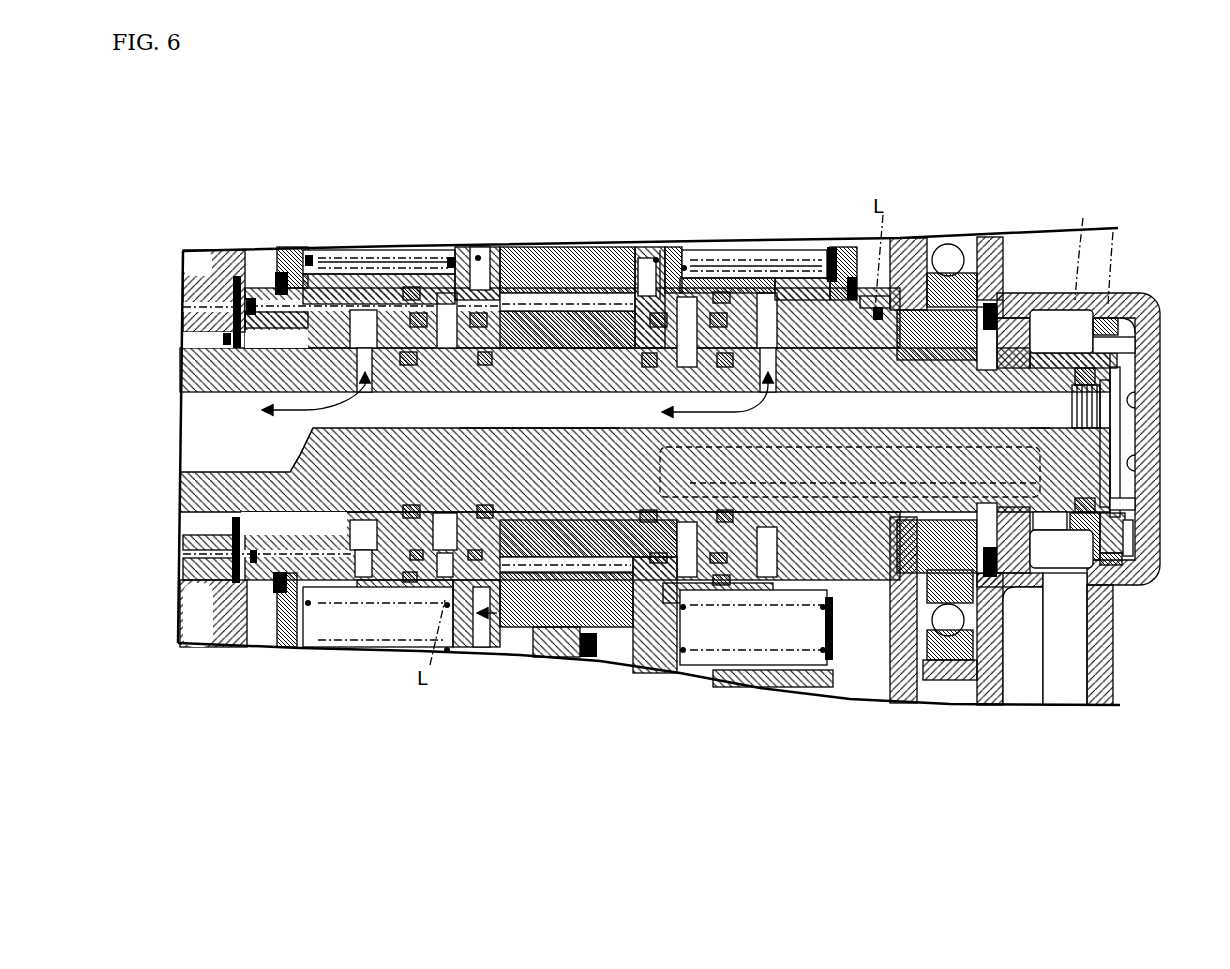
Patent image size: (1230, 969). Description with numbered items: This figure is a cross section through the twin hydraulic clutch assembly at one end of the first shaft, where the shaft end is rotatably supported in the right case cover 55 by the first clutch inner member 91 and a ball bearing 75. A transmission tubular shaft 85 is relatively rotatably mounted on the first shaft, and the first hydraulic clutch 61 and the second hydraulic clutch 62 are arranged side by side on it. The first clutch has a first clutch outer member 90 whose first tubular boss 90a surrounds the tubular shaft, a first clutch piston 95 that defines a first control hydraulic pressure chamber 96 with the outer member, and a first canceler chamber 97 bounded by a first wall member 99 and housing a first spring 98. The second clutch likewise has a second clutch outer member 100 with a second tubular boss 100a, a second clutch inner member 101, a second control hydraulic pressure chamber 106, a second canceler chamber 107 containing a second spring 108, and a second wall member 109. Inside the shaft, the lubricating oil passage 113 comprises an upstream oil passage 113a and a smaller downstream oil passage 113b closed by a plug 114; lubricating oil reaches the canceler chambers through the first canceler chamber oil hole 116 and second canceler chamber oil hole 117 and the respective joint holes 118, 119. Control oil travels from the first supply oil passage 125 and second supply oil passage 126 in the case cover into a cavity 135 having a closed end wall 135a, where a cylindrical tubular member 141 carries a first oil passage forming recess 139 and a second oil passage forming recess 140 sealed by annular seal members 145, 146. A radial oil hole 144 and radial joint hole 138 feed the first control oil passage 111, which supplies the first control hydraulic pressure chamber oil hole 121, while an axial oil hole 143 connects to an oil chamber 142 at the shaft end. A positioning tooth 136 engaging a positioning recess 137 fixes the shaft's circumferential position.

The right case cover 55 is at (990, 250).
The first hydraulic clutch 61 is at (925, 690).
The second hydraulic clutch 62 is at (205, 622).
The ball bearing 75 is at (950, 256).
The transmission tubular shaft 85 is at (547, 325).
The first clutch outer member 90 is at (646, 252).
The first tubular boss 90a is at (840, 330).
The first clutch inner member 91 is at (907, 242).
The first clutch piston 95 is at (672, 250).
The first control hydraulic pressure chamber 96 is at (662, 250).
The first canceler chamber 97 is at (800, 258).
The first spring 98 is at (690, 270).
The first wall member 99 is at (843, 260).
The second clutch outer member 100 is at (490, 250).
The second tubular boss 100a is at (305, 298).
The second clutch inner member 101 is at (216, 256).
The second control hydraulic pressure chamber 106 is at (478, 256).
The second canceler chamber 107 is at (332, 250).
The second spring 108 is at (445, 262).
The second wall member 109 is at (288, 252).
The first control oil passage 111 is at (747, 484).
The lubricating oil passage 113 is at (232, 447).
The upstream oil passage 113a is at (318, 462).
The downstream oil passage 113b is at (522, 429).
The plug 114 is at (1098, 400).
The first canceler chamber oil hole 116 is at (783, 368).
The second canceler chamber oil hole 117 is at (383, 372).
The joint hole 118 is at (767, 298).
The joint hole 119 is at (366, 300).
The first control hydraulic pressure chamber oil hole 121 is at (698, 478).
The first supply oil passage 125 is at (1085, 658).
The second supply oil passage 126 is at (1091, 249).
The cavity 135 is at (1100, 296).
The closed end wall 135a is at (1130, 503).
The positioning tooth 136 is at (1130, 540).
The positioning recess 137 is at (1118, 565).
The radial joint hole 138 is at (1047, 510).
The first oil passage forming recess 139 is at (1090, 545).
The second oil passage forming recess 140 is at (1050, 330).
The cylindrical tubular member 141 is at (1138, 322).
The oil chamber 142 is at (1128, 490).
The axial oil hole 143 is at (1113, 352).
The radial oil hole 144 is at (1061, 540).
The annular seal member 145 is at (1017, 312).
The annular seal member 146 is at (1105, 318).